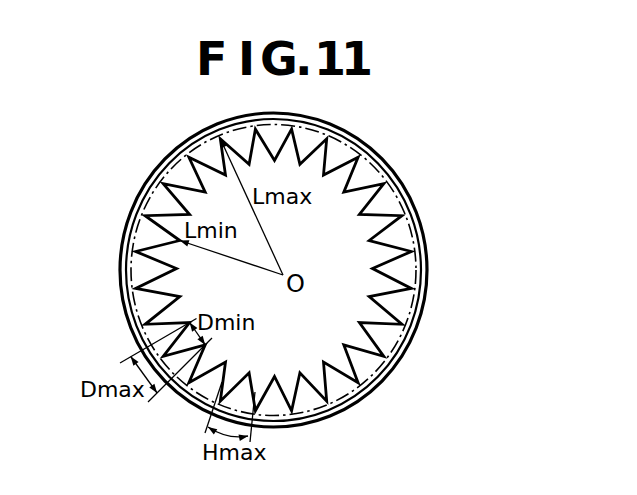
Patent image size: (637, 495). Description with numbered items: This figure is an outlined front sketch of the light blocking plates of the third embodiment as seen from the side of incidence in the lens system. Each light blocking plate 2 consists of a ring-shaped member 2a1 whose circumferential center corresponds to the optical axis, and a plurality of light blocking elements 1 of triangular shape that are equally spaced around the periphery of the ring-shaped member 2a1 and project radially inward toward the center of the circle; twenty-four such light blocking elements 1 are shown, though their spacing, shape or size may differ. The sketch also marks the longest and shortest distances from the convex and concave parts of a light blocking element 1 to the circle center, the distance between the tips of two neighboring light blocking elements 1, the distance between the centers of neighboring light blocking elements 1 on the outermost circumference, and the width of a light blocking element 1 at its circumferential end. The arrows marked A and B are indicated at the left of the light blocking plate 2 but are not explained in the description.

The light blocking element 1 is at (383, 207).
The light blocking plate 2 is at (378, 149).
The ring-shaped member 2a1 is at (425, 253).
The direction A is at (108, 264).
The direction B is at (108, 287).